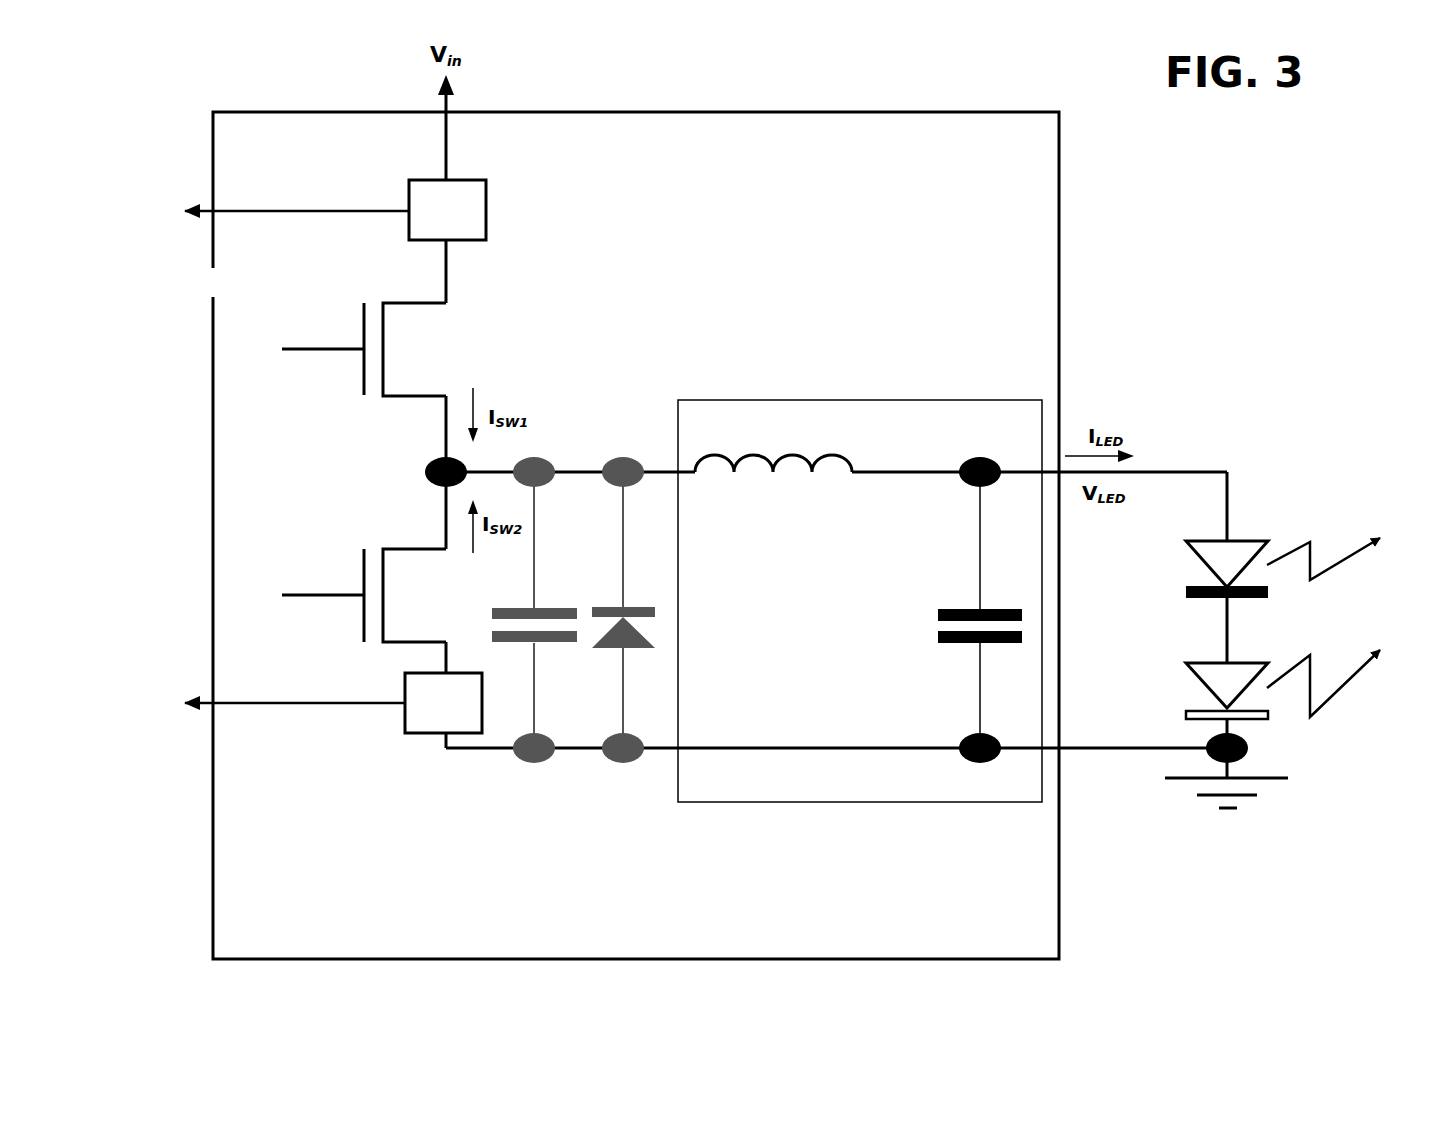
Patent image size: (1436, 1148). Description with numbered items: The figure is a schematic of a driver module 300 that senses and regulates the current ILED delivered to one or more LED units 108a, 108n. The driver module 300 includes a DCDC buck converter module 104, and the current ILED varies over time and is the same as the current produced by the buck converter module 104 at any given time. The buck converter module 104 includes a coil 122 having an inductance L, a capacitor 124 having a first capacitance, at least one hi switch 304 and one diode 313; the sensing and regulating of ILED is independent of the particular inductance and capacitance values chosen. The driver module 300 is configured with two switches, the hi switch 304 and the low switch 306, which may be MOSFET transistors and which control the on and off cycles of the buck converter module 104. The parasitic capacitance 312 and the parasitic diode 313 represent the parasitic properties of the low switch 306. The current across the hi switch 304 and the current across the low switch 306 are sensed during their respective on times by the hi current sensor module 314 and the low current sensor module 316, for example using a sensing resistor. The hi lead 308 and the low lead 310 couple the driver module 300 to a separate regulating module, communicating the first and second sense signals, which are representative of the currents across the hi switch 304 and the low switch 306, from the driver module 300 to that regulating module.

The driver module 300 is at (636, 535).
The hi switch 304 is at (364, 349).
The low switch 306 is at (364, 595).
The hi lead 308 is at (322, 195).
The low lead 310 is at (302, 692).
The parasitic capacitance 312 is at (552, 648).
The parasitic diode 313 is at (628, 620).
The hi current sensor module 314 is at (447, 210).
The low current sensor module 316 is at (443, 703).
The DCDC buck converter module 104 is at (1007, 418).
The coil 122 is at (827, 465).
The capacitor 124 is at (935, 625).
The LED unit 108a is at (1207, 557).
The LED unit 108n is at (1212, 680).